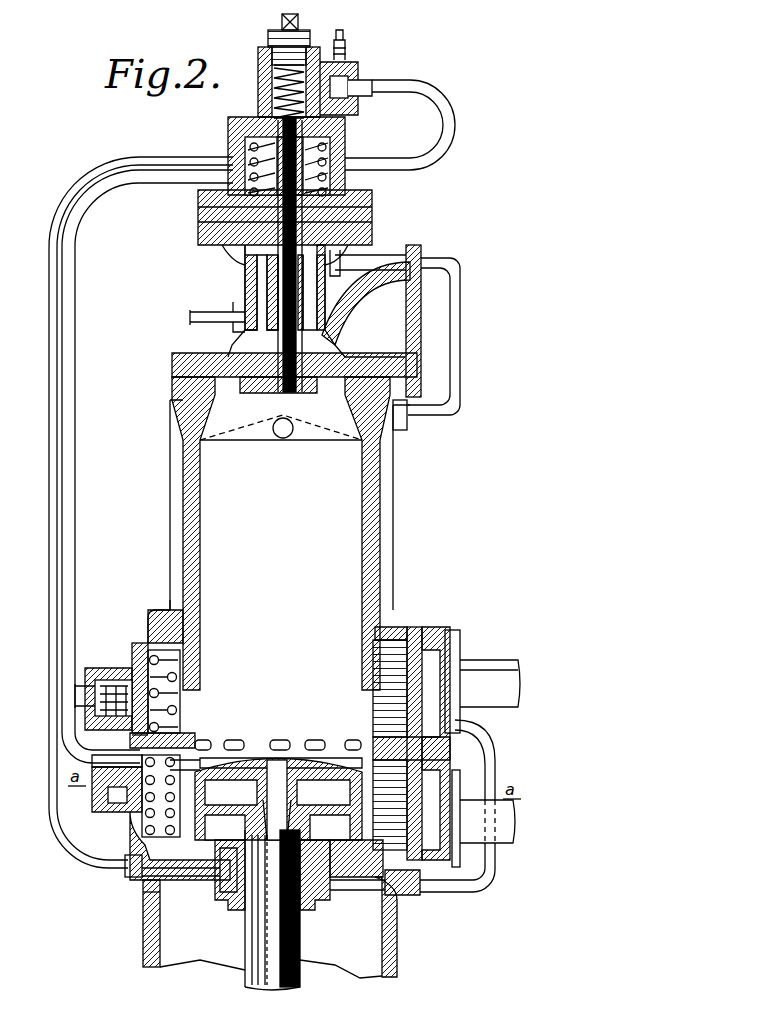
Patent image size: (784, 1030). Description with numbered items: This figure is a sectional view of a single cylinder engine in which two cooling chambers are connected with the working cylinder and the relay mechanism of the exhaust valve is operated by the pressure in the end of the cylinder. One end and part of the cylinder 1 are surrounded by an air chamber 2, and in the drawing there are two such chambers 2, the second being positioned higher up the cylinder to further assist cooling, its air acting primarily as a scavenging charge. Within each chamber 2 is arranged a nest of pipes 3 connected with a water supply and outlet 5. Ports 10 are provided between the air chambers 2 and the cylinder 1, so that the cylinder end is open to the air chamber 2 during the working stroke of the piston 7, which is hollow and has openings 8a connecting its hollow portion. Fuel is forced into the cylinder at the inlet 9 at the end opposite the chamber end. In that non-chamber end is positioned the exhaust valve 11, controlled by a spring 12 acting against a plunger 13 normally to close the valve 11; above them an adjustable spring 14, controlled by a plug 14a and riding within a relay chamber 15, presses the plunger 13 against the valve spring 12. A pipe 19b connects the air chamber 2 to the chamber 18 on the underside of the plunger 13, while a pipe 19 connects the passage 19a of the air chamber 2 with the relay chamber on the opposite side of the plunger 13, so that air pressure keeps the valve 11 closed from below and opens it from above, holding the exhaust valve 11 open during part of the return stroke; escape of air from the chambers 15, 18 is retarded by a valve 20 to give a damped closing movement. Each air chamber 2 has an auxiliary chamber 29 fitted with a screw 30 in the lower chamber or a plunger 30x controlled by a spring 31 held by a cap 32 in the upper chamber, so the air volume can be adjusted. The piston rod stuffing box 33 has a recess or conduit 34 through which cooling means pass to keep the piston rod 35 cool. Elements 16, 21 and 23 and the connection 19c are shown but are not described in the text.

The cylinder 1 is at (181, 547).
The air chamber 2 is at (72, 884).
The nest of pipes 3 is at (180, 677).
The water supply and outlet 5 is at (490, 666).
The piston 7 is at (290, 748).
The openings 8a is at (212, 766).
The inlet 9 is at (281, 434).
The ports 10 is at (268, 738).
The exhaust valve 11 is at (238, 390).
The spring 12 is at (205, 212).
The plunger 13 is at (235, 143).
The adjustable spring 14 is at (258, 96).
The plug 14a is at (269, 40).
The relay chamber 15 is at (322, 104).
The chamber 16 is at (391, 337).
The relay chamber 18 is at (330, 165).
The pipe 19 is at (418, 103).
The passage 19a is at (135, 882).
The pipe 19b is at (38, 460).
The pipe connection 19c is at (150, 940).
The valve 20 is at (341, 45).
The valve fitting 21 is at (352, 88).
The cap body 23 is at (262, 72).
The auxiliary chamber 29 is at (110, 668).
The screw 30 is at (120, 795).
The plunger 30x is at (148, 642).
The spring 31 is at (130, 732).
The cap 32 is at (90, 688).
The piston rod stuffing box 33 is at (225, 898).
The recess, chamber or conduit 34 is at (200, 872).
The piston rod 35 is at (300, 950).